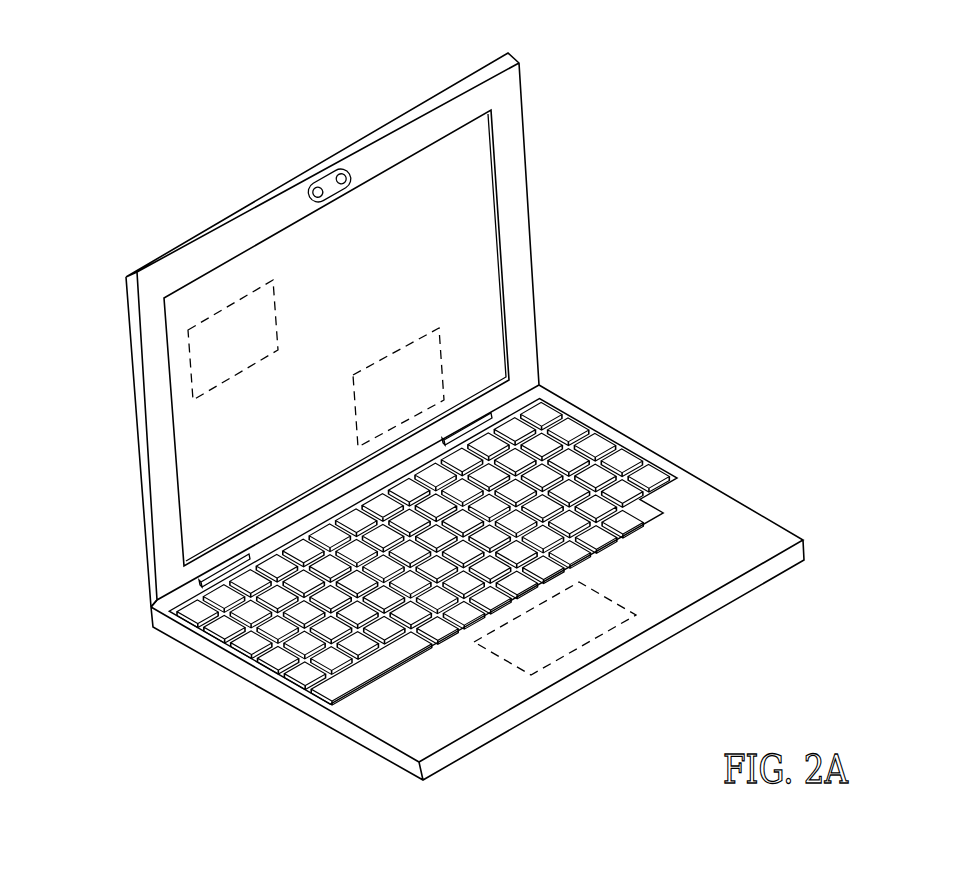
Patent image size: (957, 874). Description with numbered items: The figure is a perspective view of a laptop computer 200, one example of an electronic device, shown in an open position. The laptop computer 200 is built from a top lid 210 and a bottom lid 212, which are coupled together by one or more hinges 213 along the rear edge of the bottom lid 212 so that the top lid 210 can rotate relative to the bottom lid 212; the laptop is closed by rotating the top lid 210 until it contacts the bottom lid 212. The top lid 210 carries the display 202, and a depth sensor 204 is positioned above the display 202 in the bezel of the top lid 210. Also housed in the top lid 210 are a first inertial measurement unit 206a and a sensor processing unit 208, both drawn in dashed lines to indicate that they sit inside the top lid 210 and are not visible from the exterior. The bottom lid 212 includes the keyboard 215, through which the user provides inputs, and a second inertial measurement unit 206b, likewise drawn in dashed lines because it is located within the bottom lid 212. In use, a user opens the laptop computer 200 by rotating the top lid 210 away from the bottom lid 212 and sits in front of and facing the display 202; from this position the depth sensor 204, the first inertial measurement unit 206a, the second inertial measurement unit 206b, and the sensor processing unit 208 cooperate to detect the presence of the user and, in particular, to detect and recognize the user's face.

The laptop computer 200 is at (730, 132).
The display 202 is at (478, 195).
The depth sensor 204 is at (329, 170).
The first inertial measurement unit 206a is at (187, 357).
The second inertial measurement unit 206b is at (577, 650).
The sensor processing unit 208 is at (443, 378).
The top lid 210 is at (142, 490).
The bottom lid 212 is at (237, 667).
The hinges 213 is at (206, 580).
The keyboard 215 is at (593, 448).